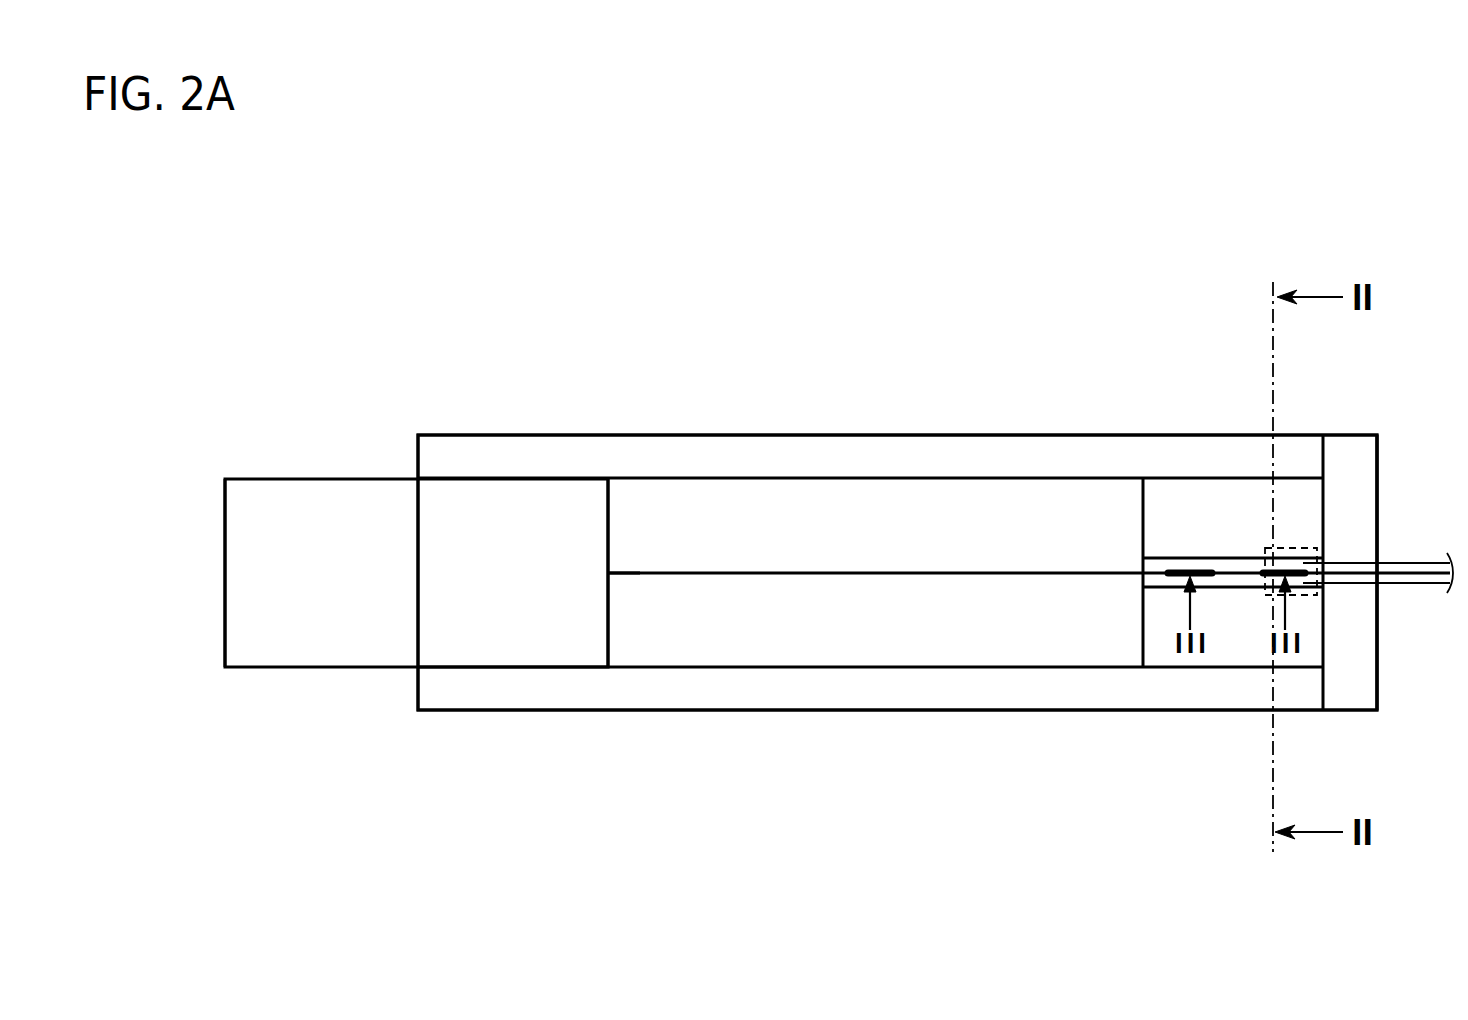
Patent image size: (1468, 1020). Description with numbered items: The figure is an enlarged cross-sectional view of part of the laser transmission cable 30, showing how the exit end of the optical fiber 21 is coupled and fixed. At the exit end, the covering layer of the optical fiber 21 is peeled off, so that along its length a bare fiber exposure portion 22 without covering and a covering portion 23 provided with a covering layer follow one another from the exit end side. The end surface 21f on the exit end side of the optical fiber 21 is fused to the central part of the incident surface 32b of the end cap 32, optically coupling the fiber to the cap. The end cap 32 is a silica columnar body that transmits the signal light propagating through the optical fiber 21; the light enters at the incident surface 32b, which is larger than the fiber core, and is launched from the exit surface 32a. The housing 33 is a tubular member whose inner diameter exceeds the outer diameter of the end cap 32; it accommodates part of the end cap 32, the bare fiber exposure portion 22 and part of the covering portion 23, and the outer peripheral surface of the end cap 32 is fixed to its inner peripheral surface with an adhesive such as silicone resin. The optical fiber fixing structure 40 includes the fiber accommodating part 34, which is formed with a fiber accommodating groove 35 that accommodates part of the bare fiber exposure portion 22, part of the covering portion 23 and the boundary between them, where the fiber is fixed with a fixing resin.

The laser transmission cable 30 is at (1220, 247).
The housing 33 is at (563, 435).
The fiber accommodating part 34 is at (1350, 435).
The end cap 32 is at (323, 479).
The exit surface 32a is at (225, 625).
The incident surface 32b is at (608, 625).
The bare fiber exposure portion 22 is at (940, 573).
The end surface 21f is at (607, 574).
The fiber accommodating groove 35 is at (1180, 563).
The covering portion 23 is at (1300, 548).
The optical fiber 21 is at (1410, 565).
The optical fiber fixing structure 40 is at (1305, 597).